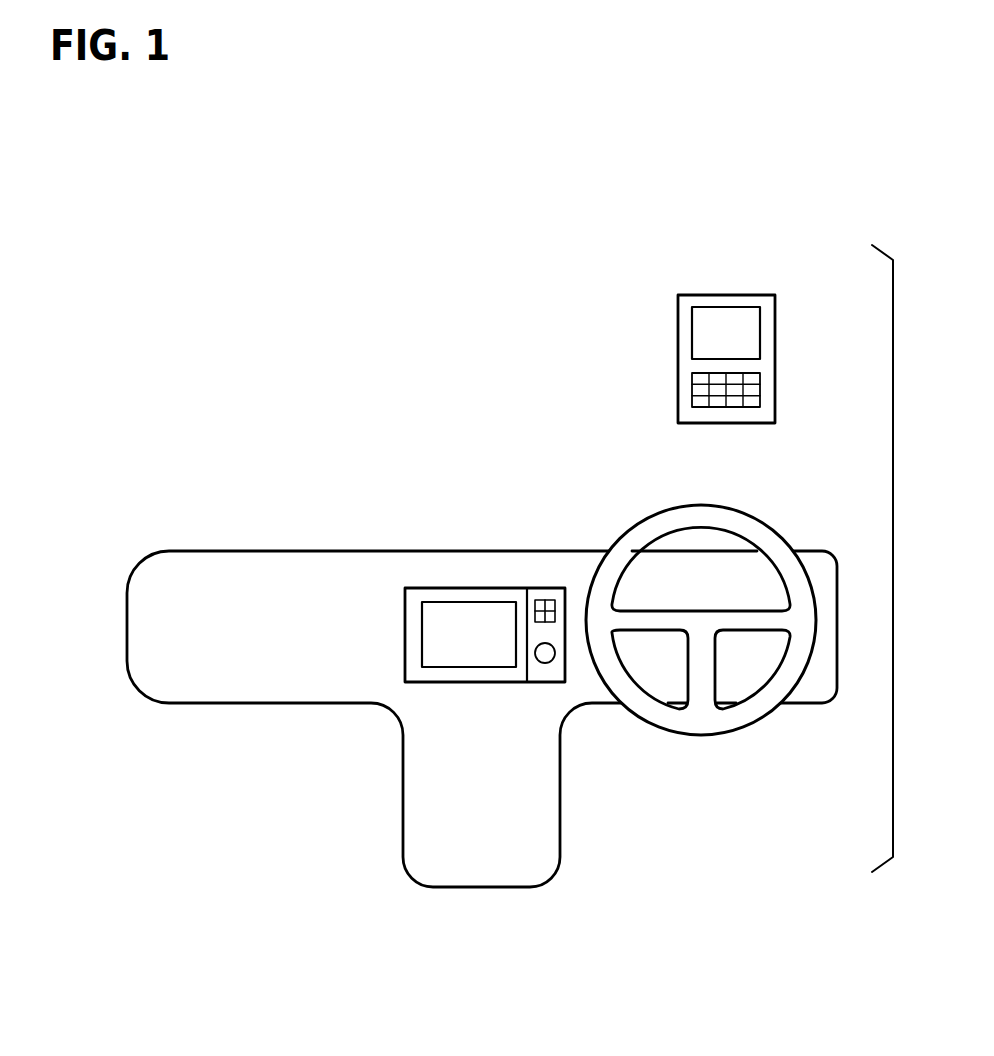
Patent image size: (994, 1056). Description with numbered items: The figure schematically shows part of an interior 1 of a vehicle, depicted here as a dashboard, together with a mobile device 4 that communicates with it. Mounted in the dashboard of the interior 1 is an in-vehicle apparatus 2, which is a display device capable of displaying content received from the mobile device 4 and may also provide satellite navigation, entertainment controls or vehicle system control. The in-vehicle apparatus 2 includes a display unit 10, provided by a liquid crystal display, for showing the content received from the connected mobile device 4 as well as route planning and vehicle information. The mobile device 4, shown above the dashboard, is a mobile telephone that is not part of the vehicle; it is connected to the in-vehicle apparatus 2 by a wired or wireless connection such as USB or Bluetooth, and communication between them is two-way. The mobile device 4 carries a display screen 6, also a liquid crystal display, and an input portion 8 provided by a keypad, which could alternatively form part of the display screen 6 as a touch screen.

The interior of a vehicle 1 is at (116, 514).
The in-vehicle apparatus 2 is at (484, 588).
The mobile device 4 is at (703, 296).
The display screen 6 is at (761, 337).
The input portion 8 is at (692, 392).
The display unit 10 is at (443, 612).